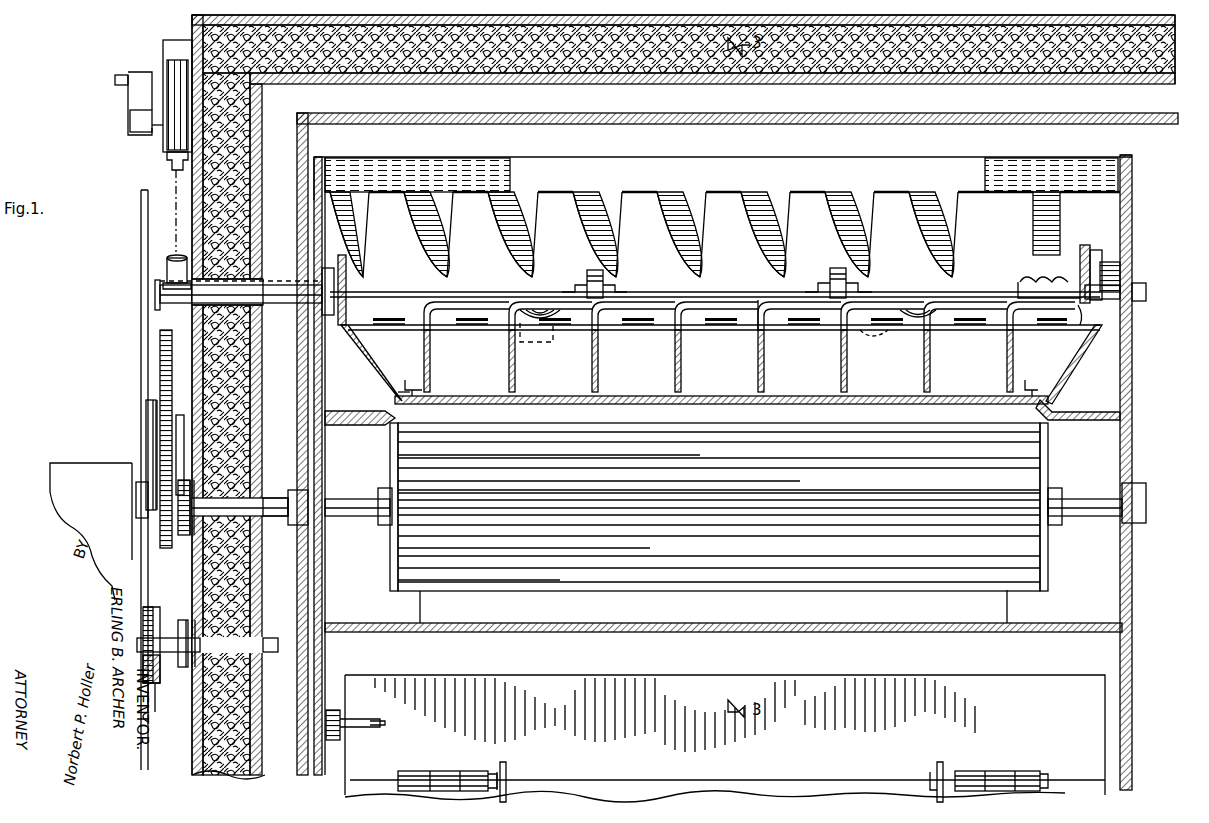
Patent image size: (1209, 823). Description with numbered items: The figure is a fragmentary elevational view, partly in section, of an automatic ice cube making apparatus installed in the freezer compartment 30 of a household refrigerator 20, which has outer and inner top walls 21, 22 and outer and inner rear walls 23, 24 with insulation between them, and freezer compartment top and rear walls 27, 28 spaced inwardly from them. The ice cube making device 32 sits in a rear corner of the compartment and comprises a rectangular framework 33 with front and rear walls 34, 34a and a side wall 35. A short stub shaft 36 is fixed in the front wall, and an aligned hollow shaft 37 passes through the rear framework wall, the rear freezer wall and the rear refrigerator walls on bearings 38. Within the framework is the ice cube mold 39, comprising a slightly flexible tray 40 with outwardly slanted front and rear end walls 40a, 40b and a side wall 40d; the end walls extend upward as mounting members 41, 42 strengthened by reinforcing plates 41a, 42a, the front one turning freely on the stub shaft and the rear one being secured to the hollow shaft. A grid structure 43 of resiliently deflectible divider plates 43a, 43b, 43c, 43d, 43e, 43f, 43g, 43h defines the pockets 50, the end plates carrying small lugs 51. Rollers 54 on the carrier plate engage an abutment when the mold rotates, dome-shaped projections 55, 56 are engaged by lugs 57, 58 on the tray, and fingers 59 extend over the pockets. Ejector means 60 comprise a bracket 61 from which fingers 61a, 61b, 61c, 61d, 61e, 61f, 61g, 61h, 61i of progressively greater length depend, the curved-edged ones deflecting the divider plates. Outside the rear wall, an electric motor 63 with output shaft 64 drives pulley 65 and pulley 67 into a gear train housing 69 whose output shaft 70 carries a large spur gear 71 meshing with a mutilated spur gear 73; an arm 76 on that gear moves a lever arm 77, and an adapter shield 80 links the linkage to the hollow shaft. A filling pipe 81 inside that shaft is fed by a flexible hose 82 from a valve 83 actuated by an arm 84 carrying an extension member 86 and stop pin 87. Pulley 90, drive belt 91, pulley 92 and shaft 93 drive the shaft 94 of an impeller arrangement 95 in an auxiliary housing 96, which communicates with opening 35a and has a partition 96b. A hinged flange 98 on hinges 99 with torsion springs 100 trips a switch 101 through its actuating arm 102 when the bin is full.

The household refrigerator 20 is at (145, 23).
The outer top wall 21 is at (683, 49).
The inner top wall 22 is at (1042, 62).
The outer rear wall 23 is at (250, 56).
The inner rear wall 24 is at (250, 97).
The top wall of freezer compartment 27 is at (815, 117).
The rear wall of freezer compartment 28 is at (297, 203).
The freezer compartment 30 is at (1174, 195).
The ice cube making device 32 is at (1152, 349).
The rectangular framework 33 is at (1133, 158).
The front wall of framework 34 is at (1134, 230).
The rear wall of framework 34a is at (313, 218).
The side wall of framework 35 is at (1106, 655).
The opening 35a is at (1006, 605).
The stub shaft 36 is at (1128, 283).
The hollow shaft 37 is at (226, 335).
The bearings 38 is at (294, 316).
The ice cube mold 39 is at (318, 381).
The tray 40 is at (892, 399).
The front end wall of tray 40a is at (1062, 376).
The rear end wall of tray 40b is at (400, 382).
The side wall of tray 40d is at (745, 300).
The mounting member 41 is at (1080, 246).
The reinforcing plate member 41a is at (1094, 333).
The mounting member 42 is at (345, 256).
The reinforcing plate member 42a is at (365, 363).
The grid structure 43 is at (491, 295).
The divider plate 43a is at (1015, 347).
The divider plate 43b is at (932, 346).
The divider plate 43c is at (849, 367).
The divider plate 43d is at (766, 372).
The divider plate 43e is at (683, 386).
The divider plate 43f is at (600, 384).
The divider plate 43g is at (508, 378).
The divider plate 43h is at (432, 356).
The pockets 50 is at (728, 361).
The lugs 51 is at (408, 380).
The rollers 54 is at (603, 282).
The dome-shaped projection 55 is at (906, 310).
The dome-shaped projection 56 is at (543, 310).
The lug 57 is at (920, 343).
The lug 58 is at (540, 345).
The fingers 59 is at (633, 325).
The ejector means 60 is at (773, 151).
The bracket 61 is at (941, 165).
The finger 61a is at (1032, 245).
The finger 61b is at (948, 230).
The finger 61c is at (866, 228).
The finger 61d is at (782, 228).
The finger 61e is at (698, 228).
The finger 61f is at (614, 228).
The finger 61g is at (530, 228).
The finger 61h is at (446, 228).
The finger 61i is at (376, 232).
The electric motor 63 is at (142, 598).
The output shaft 64 is at (170, 678).
The pulley 65 is at (150, 702).
The pulley 67 is at (186, 618).
The gear train housing 69 is at (78, 464).
The output shaft 70 is at (136, 506).
The spur gear 71 is at (178, 470).
The spur gear 73 is at (158, 370).
The arm 76 is at (148, 450).
The lever arm 77 is at (140, 322).
The adapter shield 80 is at (158, 296).
The filling pipe 81 is at (227, 277).
The flexible hose 82 is at (165, 260).
The valve 83 is at (165, 60).
The arm 84 is at (128, 94).
The extension member 86 is at (128, 117).
The stop pin 87 is at (114, 78).
The pulley 90 is at (212, 646).
The drive belt 91 is at (194, 576).
The pulley 92 is at (232, 504).
The shaft 93 is at (206, 518).
The shaft 94 is at (364, 520).
The impeller arrangement 95 is at (400, 466).
The auxiliary housing 96 is at (811, 619).
The partition 96b is at (379, 414).
The flange 98 is at (868, 688).
The hinges 99 is at (448, 778).
The torsion springs 100 is at (508, 764).
The switch 101 is at (340, 738).
The actuating arm 102 is at (360, 722).